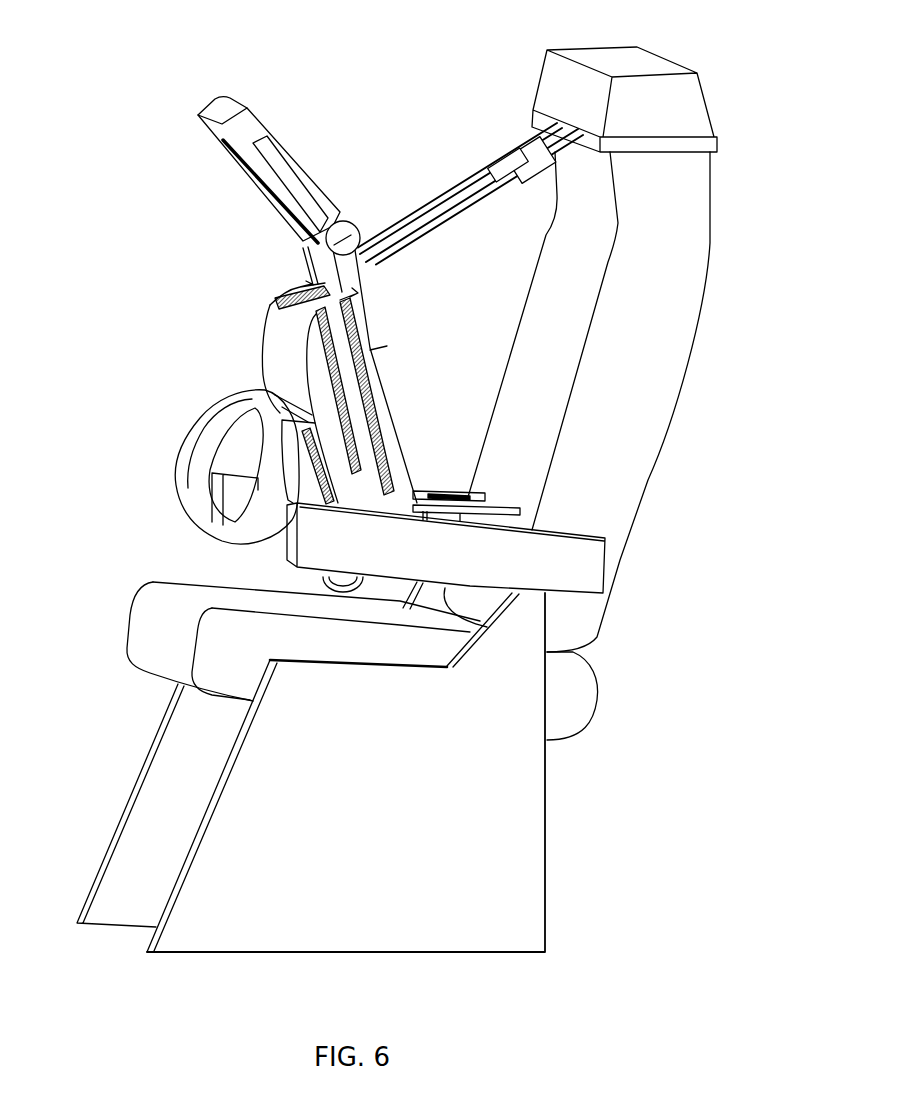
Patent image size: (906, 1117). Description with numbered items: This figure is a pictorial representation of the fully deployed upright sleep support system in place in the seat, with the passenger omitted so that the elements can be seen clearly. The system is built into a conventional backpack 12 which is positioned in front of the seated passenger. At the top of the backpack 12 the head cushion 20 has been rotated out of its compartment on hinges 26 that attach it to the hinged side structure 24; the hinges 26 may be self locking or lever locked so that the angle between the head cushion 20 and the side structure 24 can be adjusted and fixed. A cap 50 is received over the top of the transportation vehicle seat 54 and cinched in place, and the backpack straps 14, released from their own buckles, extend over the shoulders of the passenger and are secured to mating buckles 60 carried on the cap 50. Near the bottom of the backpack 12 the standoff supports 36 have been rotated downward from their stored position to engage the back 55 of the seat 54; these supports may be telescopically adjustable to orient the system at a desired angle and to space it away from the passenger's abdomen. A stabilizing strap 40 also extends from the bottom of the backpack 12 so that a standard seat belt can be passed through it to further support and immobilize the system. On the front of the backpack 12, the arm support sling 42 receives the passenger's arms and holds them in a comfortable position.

The backpack 12 is at (265, 332).
The straps 14 is at (430, 203).
The head cushion 20 is at (243, 133).
The hinged side structure 24 is at (388, 387).
The hinges 26 is at (338, 252).
The standoff supports 36 is at (468, 497).
The stabilizing strap 40 is at (330, 575).
The arm support sling 42 is at (198, 447).
The cap 50 is at (640, 68).
The transportation vehicle seat 54 is at (665, 305).
The back 55 is at (528, 453).
The mating buckles 60 is at (515, 145).